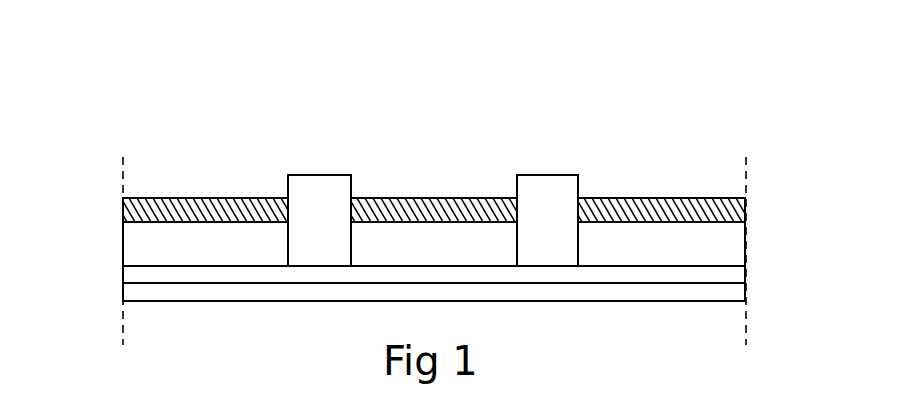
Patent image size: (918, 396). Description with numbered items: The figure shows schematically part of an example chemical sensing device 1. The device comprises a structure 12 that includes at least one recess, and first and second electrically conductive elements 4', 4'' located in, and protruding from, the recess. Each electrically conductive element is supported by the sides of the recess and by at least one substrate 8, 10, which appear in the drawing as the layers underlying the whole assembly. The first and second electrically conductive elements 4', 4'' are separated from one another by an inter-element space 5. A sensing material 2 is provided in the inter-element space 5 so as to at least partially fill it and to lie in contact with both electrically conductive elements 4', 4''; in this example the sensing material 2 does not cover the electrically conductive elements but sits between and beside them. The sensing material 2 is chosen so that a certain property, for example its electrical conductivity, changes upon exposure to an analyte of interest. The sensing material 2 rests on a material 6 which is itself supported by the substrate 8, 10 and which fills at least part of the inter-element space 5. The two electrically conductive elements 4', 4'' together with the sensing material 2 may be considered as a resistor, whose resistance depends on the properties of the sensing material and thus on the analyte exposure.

The chemical sensing device 1 is at (106, 99).
The sensing material 2 is at (203, 198).
The first electrically conductive element 4' is at (319, 184).
The second electrically conductive element 4'' is at (548, 188).
The inter-element space 5 is at (437, 188).
The material 6 is at (172, 253).
The substrate 8 is at (172, 275).
The substrate 10 is at (173, 292).
The structure 12 is at (654, 313).